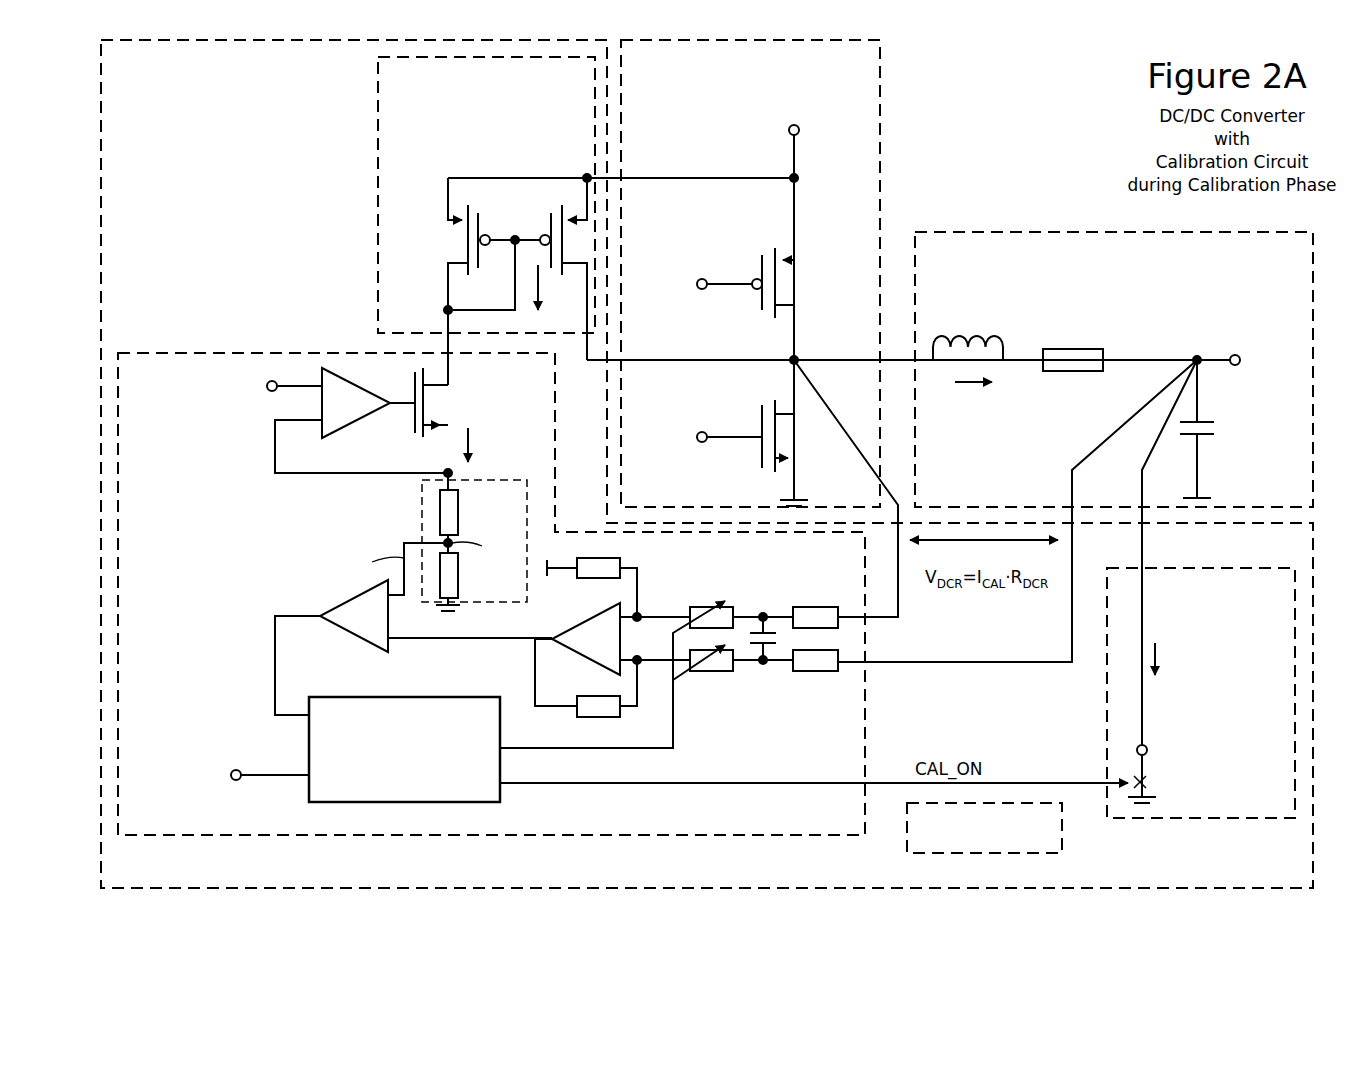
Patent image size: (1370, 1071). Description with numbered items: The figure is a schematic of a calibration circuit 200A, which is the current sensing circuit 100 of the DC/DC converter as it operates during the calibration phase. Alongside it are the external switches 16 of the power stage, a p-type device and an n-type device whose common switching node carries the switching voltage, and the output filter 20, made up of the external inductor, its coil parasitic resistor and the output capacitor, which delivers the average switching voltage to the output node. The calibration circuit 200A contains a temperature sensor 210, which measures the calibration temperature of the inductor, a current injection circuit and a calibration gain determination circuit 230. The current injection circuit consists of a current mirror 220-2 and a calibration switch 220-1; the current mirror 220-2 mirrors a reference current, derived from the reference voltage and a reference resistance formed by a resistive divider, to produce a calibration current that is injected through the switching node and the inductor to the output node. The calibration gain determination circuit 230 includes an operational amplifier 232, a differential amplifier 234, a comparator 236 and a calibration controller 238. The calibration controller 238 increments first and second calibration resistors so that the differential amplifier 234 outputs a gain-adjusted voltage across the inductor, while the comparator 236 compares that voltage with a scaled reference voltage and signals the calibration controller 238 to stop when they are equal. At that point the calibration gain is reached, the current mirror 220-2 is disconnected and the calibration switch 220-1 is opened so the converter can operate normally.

The calibration circuit 200A is at (707, 464).
The current sensing circuit 100 is at (707, 464).
The current mirror 220-2 is at (586, 221).
The external switches 16 is at (750, 273).
The output filter 20 is at (1114, 369).
The calibration gain determination circuit 230 is at (491, 594).
The operational amplifier 232 is at (356, 403).
The differential amplifier 234 is at (586, 639).
The comparator 236 is at (354, 616).
The calibration controller 238 is at (404, 749).
The calibration switch 220-1 is at (1201, 693).
The temperature sensor 210 is at (984, 828).